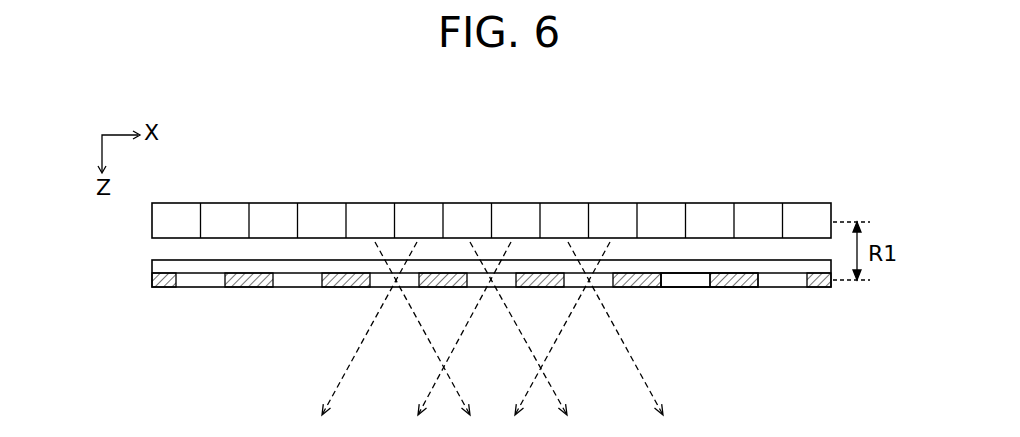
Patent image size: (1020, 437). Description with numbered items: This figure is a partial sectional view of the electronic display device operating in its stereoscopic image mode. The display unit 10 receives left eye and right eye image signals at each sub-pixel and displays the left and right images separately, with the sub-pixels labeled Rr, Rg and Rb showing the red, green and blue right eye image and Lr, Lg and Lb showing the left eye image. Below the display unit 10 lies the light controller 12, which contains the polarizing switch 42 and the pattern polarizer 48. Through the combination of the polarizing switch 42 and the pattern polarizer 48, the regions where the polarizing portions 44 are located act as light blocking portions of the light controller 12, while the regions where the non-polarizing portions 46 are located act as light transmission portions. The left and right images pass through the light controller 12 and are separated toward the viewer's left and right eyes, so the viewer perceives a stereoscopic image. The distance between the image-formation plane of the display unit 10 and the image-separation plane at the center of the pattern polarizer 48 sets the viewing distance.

The display unit 10 is at (782, 180).
The light controller 12 is at (471, 320).
The polarizing switch 42 is at (152, 265).
The polarizing portion 44 is at (738, 288).
The non-polarizing portion 46 is at (687, 288).
The pattern polarizer 48 is at (757, 344).